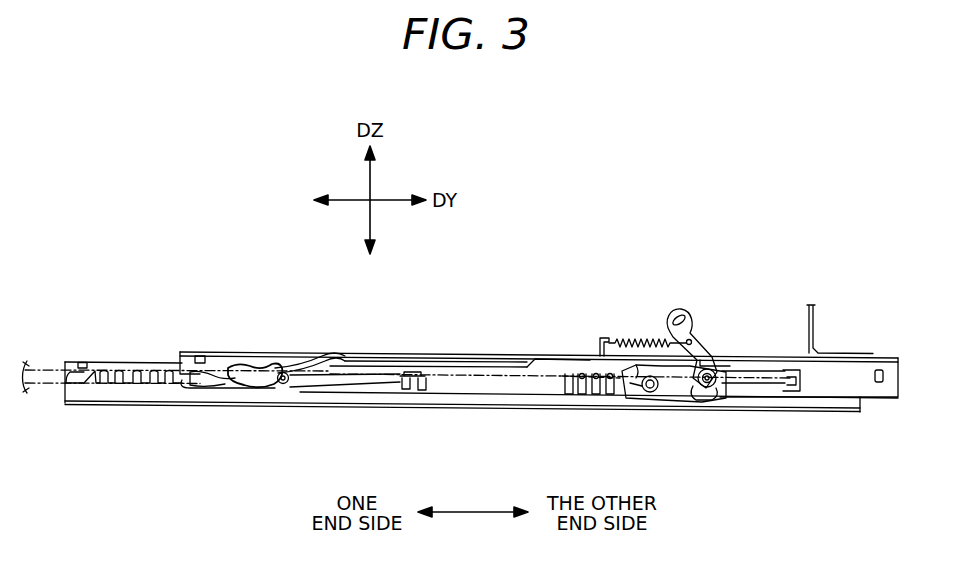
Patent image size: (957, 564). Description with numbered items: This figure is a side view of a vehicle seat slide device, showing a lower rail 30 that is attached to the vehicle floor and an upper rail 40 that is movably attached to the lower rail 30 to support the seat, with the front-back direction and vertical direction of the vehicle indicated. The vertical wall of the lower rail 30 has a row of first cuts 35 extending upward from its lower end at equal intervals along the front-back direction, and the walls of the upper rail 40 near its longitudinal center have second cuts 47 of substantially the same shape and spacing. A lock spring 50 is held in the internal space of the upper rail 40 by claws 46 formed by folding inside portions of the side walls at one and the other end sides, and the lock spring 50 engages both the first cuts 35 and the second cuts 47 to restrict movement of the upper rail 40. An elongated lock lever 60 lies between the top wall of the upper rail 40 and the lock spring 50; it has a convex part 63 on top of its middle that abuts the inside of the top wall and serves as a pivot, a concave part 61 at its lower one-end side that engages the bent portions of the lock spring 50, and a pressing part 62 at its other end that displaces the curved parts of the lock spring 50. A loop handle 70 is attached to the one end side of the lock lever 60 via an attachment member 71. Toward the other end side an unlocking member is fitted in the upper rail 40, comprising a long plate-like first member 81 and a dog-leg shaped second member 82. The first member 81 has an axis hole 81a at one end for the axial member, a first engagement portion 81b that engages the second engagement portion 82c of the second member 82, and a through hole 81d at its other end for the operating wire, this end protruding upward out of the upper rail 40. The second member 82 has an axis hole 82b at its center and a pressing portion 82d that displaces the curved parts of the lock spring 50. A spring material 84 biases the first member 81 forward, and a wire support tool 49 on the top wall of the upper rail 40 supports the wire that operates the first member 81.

The lower rail 30 is at (327, 408).
The first cut 35 is at (115, 383).
The upper rail 40 is at (450, 352).
The claw 46 is at (415, 395).
The second cut 47 is at (575, 398).
The wire support tool 49 is at (817, 303).
The lock spring 50 is at (760, 388).
The lock lever 60 is at (318, 365).
The concave part 61 is at (283, 387).
The pressing part 62 is at (590, 402).
The convex part 63 is at (340, 352).
The loop handle 70 is at (43, 368).
The attachment member 71 is at (263, 363).
The first member 81 is at (702, 333).
The axis hole 81a is at (712, 393).
The first engagement portion 81b is at (680, 407).
The through hole 81d is at (678, 313).
The second member 82 is at (632, 399).
The axis hole 82b is at (648, 395).
The second engagement portion 82c is at (713, 369).
The pressing portion 82d is at (589, 353).
The spring material 84 is at (633, 340).